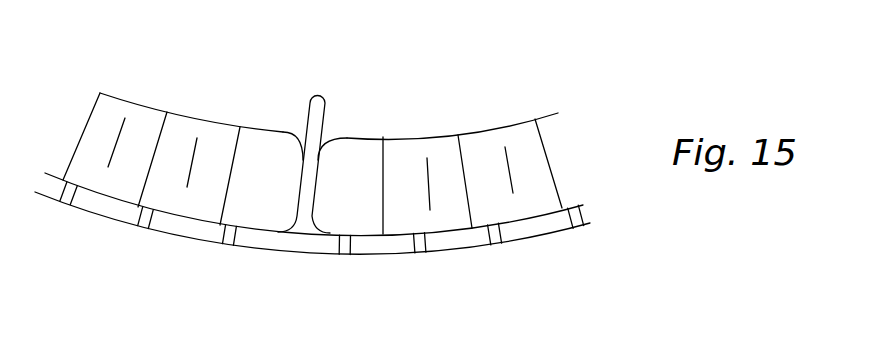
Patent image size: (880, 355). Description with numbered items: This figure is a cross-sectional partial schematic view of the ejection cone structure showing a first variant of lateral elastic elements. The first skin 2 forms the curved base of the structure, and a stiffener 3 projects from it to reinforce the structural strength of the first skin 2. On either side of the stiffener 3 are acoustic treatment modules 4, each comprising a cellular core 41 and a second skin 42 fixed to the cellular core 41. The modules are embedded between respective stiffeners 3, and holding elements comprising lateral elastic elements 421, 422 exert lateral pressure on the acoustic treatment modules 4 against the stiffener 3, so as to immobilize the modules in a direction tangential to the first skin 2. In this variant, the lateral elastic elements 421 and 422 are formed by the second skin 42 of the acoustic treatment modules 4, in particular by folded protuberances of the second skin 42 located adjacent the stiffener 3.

The first skin 2 is at (377, 243).
The stiffener 3 is at (319, 93).
The acoustic treatment module 4 is at (182, 58).
The cellular core 41 is at (89, 118).
The second skin 42 is at (132, 102).
The lateral elastic element 421 is at (292, 180).
The lateral elastic element 422 is at (292, 101).